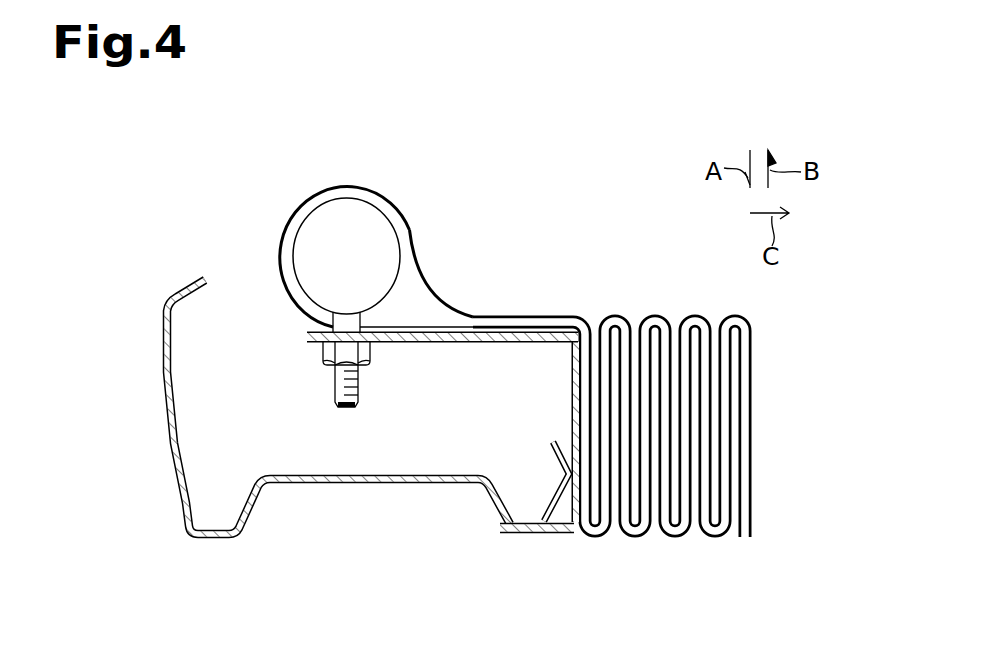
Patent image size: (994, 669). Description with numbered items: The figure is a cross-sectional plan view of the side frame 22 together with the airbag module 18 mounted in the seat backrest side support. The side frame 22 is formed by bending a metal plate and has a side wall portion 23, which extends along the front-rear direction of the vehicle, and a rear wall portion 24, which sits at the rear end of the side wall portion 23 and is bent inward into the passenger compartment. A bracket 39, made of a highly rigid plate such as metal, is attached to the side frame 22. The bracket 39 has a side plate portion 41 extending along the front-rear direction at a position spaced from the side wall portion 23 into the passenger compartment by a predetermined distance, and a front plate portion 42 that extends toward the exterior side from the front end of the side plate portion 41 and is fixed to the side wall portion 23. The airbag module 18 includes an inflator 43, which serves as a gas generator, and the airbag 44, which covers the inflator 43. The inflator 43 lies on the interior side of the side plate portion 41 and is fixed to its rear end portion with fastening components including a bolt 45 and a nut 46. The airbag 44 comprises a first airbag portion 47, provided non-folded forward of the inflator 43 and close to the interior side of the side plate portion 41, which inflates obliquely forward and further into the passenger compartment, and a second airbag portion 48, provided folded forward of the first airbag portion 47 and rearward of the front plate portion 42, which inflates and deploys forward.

The airbag module 18 is at (578, 236).
The side frame 22 is at (338, 445).
The side wall portion 23 is at (441, 484).
The rear wall portion 24 is at (308, 445).
The bracket 39 is at (442, 429).
The side plate portion 41 is at (541, 412).
The front plate portion 42 is at (571, 390).
The inflator 43 is at (308, 228).
The airbag 44 is at (526, 316).
The bolt 45 is at (334, 388).
The nut 46 is at (326, 348).
The first airbag portion 47 is at (473, 316).
The second airbag portion 48 is at (749, 430).